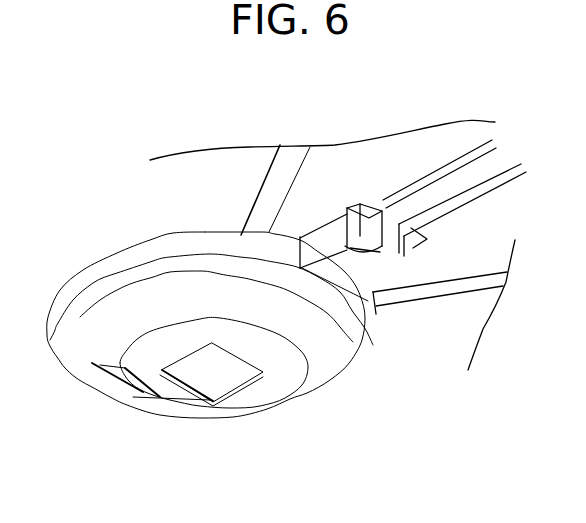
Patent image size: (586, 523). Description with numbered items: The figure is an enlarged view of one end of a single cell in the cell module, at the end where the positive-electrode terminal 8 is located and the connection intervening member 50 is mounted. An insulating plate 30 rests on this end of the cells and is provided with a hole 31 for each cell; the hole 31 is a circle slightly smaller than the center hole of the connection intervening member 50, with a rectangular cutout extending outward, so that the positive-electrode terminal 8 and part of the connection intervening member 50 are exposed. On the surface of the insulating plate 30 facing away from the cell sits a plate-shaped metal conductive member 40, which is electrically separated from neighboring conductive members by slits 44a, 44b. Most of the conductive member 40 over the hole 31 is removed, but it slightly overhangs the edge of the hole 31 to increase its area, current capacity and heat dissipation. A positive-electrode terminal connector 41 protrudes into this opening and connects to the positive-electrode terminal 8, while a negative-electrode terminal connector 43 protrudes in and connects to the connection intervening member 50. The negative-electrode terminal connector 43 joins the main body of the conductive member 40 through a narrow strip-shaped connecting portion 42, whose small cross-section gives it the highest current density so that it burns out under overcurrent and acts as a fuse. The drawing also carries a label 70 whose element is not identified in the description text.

The positive-electrode terminal 8 is at (267, 395).
The insulating plate 30 is at (235, 247).
The hole 31 is at (334, 353).
The conductive member 40 is at (187, 167).
The positive-electrode terminal connector 41 is at (172, 388).
The connecting portion 42 is at (443, 190).
The negative-electrode terminal connector 43 is at (372, 256).
The slit 44a is at (437, 298).
The slit 44b is at (275, 163).
The connection intervening member 50 is at (347, 208).
The bracket 70 is at (375, 309).